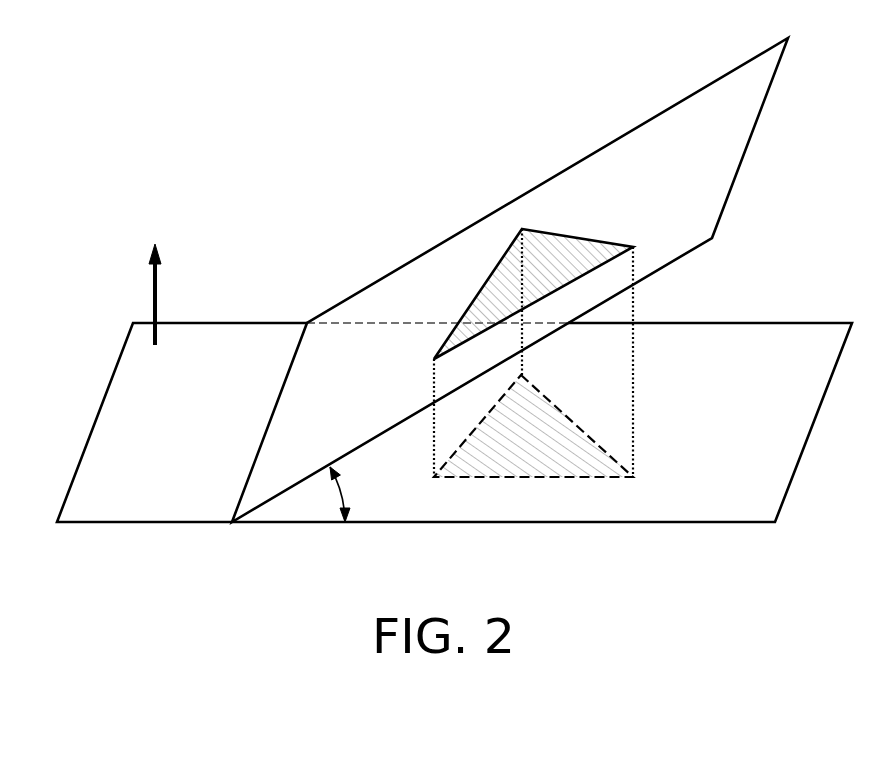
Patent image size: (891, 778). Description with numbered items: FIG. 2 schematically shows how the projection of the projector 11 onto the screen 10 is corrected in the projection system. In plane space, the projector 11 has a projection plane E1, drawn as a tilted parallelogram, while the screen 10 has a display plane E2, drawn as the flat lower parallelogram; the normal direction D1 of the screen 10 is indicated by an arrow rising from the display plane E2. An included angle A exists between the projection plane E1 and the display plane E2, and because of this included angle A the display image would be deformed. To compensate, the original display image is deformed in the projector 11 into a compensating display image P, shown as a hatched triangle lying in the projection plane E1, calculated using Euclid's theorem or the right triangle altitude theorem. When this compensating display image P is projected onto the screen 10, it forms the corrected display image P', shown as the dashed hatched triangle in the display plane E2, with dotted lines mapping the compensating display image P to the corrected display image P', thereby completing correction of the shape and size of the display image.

The screen 10 is at (787, 323).
The projector 11 is at (427, 268).
The projection plane E1 is at (741, 98).
The display plane E2 is at (809, 352).
The normal direction D1 is at (155, 276).
The included angle A is at (351, 494).
The compensating display image P is at (533, 322).
The corrected display image P' is at (533, 404).